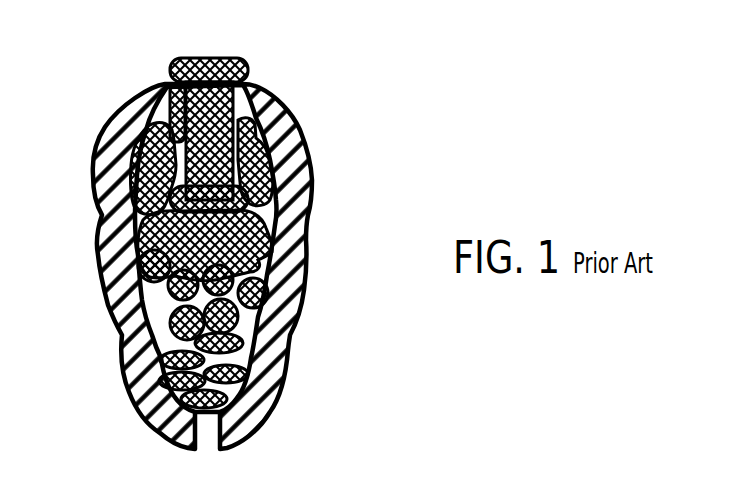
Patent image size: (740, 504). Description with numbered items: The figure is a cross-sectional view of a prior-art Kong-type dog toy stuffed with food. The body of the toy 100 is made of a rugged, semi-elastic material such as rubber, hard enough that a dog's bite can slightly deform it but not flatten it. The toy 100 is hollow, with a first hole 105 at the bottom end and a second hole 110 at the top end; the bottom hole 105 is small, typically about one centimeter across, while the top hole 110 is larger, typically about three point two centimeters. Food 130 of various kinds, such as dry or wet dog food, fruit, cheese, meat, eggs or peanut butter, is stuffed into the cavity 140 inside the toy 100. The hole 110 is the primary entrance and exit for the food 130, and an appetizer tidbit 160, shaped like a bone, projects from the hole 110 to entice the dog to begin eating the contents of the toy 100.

The toy 100 is at (293, 338).
The first hole 105 is at (207, 452).
The second hole 110 is at (236, 103).
The food 130 is at (250, 198).
The cavity 140 is at (262, 267).
The appetizer tidbit 160 is at (244, 64).